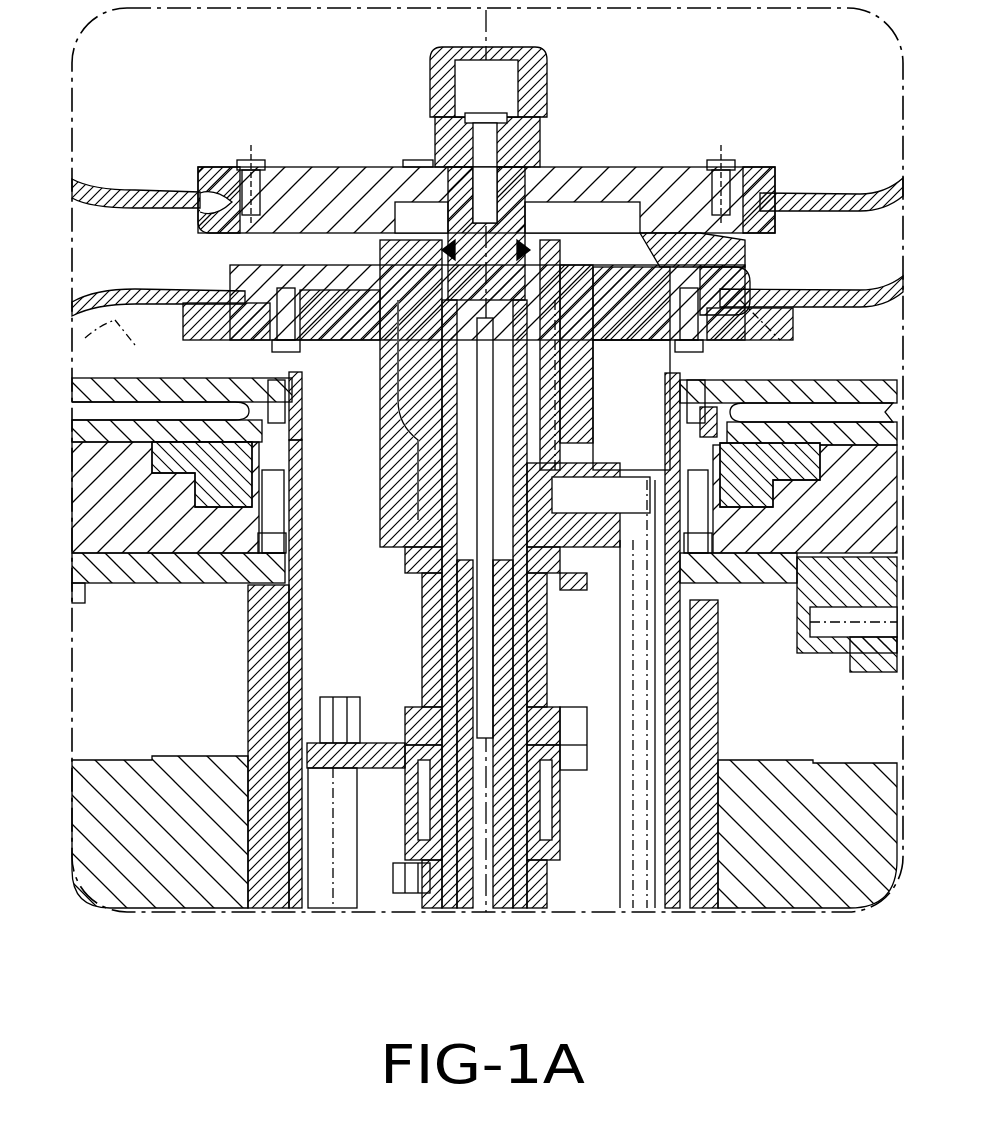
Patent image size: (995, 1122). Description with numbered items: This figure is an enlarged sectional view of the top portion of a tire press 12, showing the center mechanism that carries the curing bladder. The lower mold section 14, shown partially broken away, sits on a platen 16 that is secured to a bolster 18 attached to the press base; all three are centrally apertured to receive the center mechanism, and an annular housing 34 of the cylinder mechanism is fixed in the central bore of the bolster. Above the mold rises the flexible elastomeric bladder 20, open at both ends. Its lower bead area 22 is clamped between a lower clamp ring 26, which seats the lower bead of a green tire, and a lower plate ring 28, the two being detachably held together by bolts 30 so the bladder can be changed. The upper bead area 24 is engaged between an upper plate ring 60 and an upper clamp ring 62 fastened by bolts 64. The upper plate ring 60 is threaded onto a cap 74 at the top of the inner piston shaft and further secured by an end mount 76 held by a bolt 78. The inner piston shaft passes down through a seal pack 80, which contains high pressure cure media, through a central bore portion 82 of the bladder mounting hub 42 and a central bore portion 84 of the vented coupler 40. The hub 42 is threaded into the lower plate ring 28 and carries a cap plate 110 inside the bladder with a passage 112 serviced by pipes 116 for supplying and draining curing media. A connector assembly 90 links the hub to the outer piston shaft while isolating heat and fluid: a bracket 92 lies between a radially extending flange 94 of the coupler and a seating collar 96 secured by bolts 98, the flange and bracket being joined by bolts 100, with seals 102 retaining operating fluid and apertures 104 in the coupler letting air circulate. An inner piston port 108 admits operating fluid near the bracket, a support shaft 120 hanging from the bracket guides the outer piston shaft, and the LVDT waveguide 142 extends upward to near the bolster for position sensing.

The press 12 is at (815, 150).
The lower mold section 14 is at (100, 345).
The platen 16 is at (85, 392).
The bolster 18 is at (95, 480).
The bladder 20 is at (95, 194).
The lower bead area 22 is at (735, 280).
The upper bead area 24 is at (752, 200).
The lower clamp ring 26 is at (770, 322).
The lower plate ring 28 is at (670, 272).
The bolts 30 is at (282, 348).
The annular housing 34 is at (290, 880).
The vented coupler 40 is at (430, 650).
The bladder mounting hub 42 is at (392, 360).
The upper plate ring 60 is at (342, 185).
The upper clamp ring 62 is at (208, 185).
The bolts 64 is at (262, 162).
The cap 74 is at (520, 222).
The end mount 76 is at (533, 78).
The bolt 78 is at (478, 117).
The seal pack 80 is at (543, 300).
The central bore portion 82 is at (400, 520).
The central bore portion 84 is at (527, 620).
The connector assembly 90 is at (592, 728).
The bracket 92 is at (308, 740).
The flange 94 is at (548, 715).
The seating collar 96 is at (545, 860).
The bolts 98 is at (425, 800).
The bolts 100 is at (552, 750).
The seals 102 is at (430, 795).
The apertures 104 is at (432, 585).
The inner piston port 108 is at (420, 895).
The cap plate 110 is at (372, 265).
The passage 112 is at (560, 300).
The pipes 116 is at (640, 640).
The support shaft 120 is at (322, 885).
The waveguide 142 is at (487, 528).